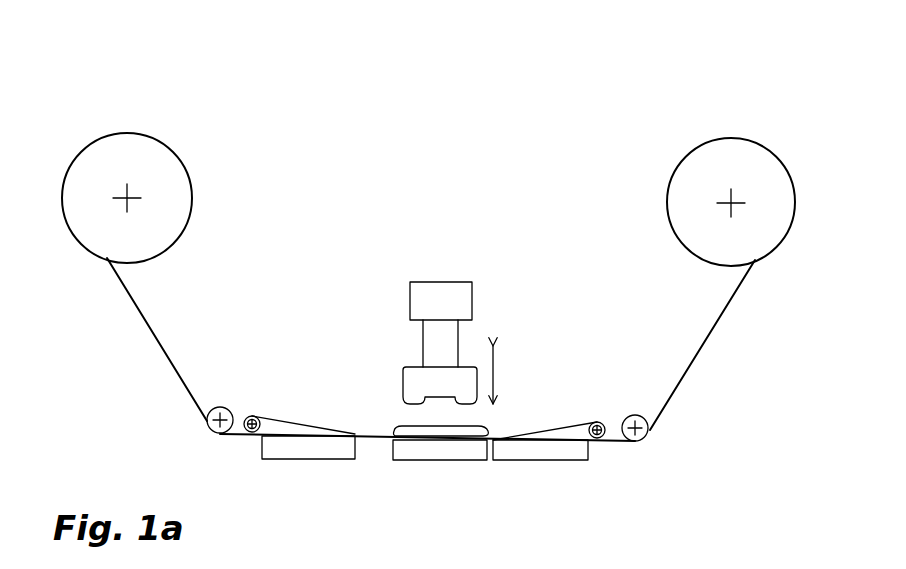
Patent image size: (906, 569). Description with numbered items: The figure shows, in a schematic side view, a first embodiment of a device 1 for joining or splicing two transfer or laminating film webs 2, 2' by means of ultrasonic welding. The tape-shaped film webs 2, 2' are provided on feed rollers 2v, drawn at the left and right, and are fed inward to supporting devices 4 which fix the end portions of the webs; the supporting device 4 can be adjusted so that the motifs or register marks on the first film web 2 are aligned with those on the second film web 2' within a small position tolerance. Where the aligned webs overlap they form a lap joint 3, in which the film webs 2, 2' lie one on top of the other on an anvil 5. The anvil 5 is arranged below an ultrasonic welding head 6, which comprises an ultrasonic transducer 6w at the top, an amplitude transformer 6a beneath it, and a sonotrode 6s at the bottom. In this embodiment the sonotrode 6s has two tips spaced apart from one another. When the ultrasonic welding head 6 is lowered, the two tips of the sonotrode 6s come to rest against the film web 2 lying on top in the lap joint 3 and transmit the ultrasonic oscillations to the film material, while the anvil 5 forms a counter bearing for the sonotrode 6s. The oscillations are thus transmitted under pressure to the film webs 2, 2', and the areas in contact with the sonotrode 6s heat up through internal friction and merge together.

The device 1 is at (703, 70).
The feed rollers 2v is at (93, 153).
The first film web 2 is at (371, 349).
The second film web 2' is at (688, 350).
The lap joint 3 is at (440, 426).
The supporting device 4 is at (290, 464).
The anvil 5 is at (475, 455).
The ultrasonic welding head 6 is at (392, 328).
The ultrasonic transducer 6w is at (462, 293).
The amplitude transformer 6a is at (452, 348).
The sonotrode 6s is at (408, 380).